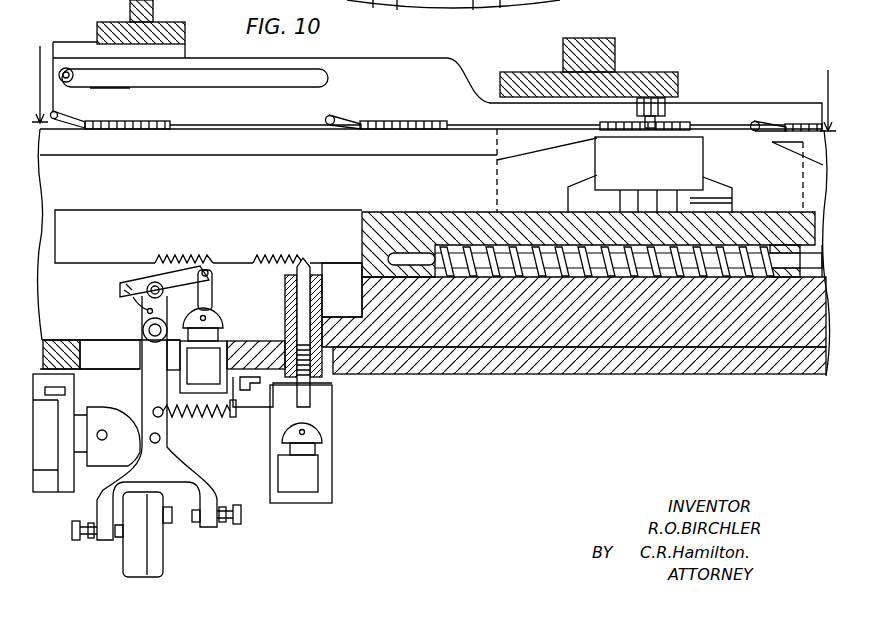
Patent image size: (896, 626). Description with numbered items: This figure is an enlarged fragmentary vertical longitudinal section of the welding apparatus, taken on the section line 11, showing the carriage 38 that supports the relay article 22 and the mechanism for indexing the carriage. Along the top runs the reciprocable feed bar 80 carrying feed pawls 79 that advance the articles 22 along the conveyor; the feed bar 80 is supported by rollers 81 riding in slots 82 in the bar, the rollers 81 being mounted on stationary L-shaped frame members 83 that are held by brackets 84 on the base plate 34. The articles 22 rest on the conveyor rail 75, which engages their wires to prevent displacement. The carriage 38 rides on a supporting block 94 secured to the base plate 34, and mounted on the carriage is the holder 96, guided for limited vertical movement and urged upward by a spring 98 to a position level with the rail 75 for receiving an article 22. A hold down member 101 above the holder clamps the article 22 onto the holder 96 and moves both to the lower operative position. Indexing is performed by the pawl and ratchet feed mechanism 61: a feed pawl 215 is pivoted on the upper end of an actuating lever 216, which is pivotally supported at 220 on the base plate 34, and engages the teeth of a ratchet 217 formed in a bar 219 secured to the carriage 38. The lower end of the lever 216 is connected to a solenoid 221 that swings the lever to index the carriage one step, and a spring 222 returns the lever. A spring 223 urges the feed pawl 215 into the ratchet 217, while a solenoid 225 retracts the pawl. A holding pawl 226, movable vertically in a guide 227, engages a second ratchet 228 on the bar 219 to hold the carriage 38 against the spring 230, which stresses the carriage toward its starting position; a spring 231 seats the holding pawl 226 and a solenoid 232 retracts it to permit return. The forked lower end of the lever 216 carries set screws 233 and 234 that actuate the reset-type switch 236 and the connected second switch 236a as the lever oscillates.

The section line 11 is at (434, 79).
The article 22 is at (140, 119).
The base plate 34 is at (483, 364).
The carriage 38 is at (407, 213).
The pawl and ratchet feed mechanism 61 is at (322, 522).
The rail 75 is at (543, 143).
The feed pawl 79 is at (58, 113).
The feed bar 80 is at (271, 90).
The roller 81 is at (66, 68).
The slot 82 is at (211, 77).
The L-shaped frame member 83 is at (110, 97).
The bracket 84 is at (163, 22).
The supporting block 94 is at (578, 322).
The holder 96 is at (703, 161).
The spring 98 is at (733, 200).
The hold down member 101 is at (622, 72).
The feed pawl 215 is at (165, 280).
The actuating lever 216 is at (152, 380).
The ratchet 217 is at (172, 253).
The bar 219 is at (200, 222).
The pivot 220 is at (143, 328).
The solenoid 221 is at (48, 471).
The spring 222 is at (207, 418).
The spring 223 is at (133, 298).
The solenoid 225 is at (210, 358).
The holding pawl 226 is at (300, 283).
The guide 227 is at (290, 303).
The ratchet 228 is at (287, 253).
The spring 230 is at (649, 262).
The spring 231 is at (342, 290).
The solenoid 232 is at (318, 470).
The set screw 233 is at (78, 538).
The set screw 234 is at (236, 526).
The switch 236 is at (157, 543).
The second switch 236a is at (140, 558).